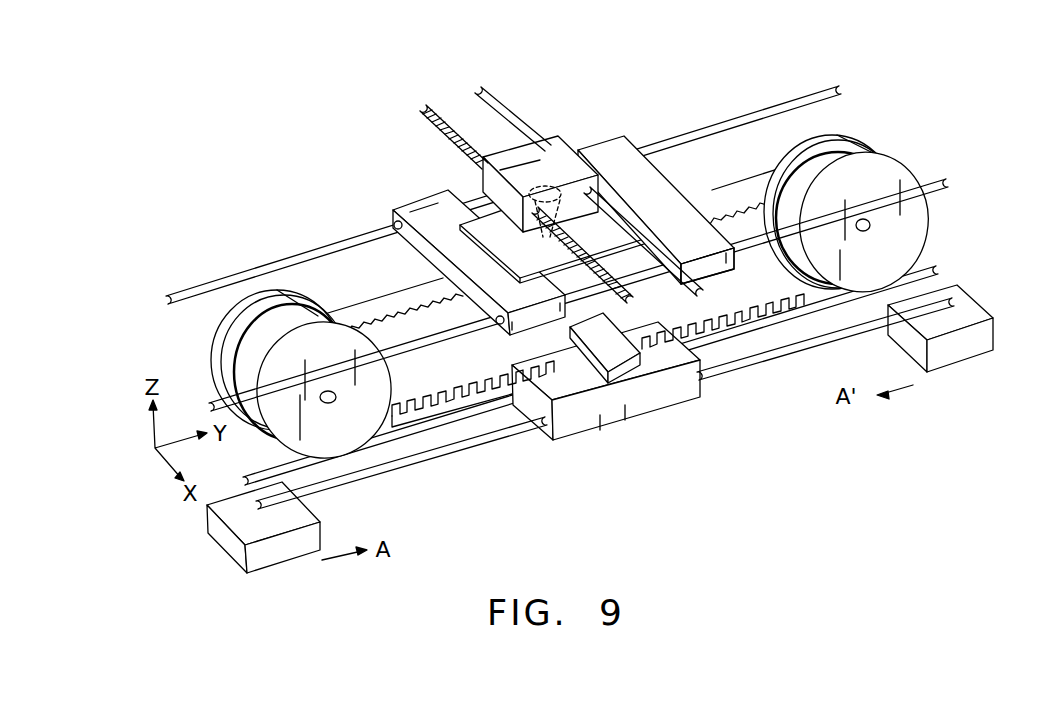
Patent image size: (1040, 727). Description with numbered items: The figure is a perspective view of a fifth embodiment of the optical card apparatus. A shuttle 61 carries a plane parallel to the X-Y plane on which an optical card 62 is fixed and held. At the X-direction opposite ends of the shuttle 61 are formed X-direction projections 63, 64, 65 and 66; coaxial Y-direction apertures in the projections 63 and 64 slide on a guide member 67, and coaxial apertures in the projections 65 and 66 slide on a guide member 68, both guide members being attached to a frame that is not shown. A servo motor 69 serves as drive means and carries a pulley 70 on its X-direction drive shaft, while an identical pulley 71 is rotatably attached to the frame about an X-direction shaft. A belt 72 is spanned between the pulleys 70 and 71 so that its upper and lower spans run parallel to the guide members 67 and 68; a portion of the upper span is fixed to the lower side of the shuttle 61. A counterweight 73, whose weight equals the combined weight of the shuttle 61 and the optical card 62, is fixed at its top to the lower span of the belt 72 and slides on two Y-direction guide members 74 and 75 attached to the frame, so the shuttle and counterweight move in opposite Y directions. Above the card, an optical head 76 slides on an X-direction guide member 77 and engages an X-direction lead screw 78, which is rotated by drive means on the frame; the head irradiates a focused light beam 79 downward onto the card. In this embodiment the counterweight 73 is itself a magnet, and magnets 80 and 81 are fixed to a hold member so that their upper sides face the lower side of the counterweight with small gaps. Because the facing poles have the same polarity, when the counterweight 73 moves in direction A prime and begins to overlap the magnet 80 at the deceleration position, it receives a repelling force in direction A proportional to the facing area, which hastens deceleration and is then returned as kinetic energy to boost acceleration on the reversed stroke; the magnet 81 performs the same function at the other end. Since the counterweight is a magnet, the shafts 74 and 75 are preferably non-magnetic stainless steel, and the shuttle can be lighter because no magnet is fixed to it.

The shuttle 61 is at (447, 247).
The optical card 62 is at (490, 220).
The X-direction projection 63 is at (520, 330).
The X-direction projection 64 is at (712, 268).
The X-direction projection 65 is at (423, 207).
The X-direction projection 66 is at (620, 156).
The guide member 67 is at (937, 180).
The guide member 68 is at (787, 102).
The servo motor 69 is at (215, 347).
The pulley 70 is at (338, 440).
The pulley 71 is at (860, 280).
The belt 72 is at (725, 198).
The counterweight 73 is at (650, 396).
The guide member 74 is at (440, 458).
The guide member 75 is at (495, 410).
The optical head 76 is at (548, 146).
The guide member 77 is at (500, 101).
The X-direction lead screw 78 is at (424, 108).
The focused light beam 79 is at (583, 160).
The magnet 80 is at (228, 548).
The magnet 81 is at (960, 355).